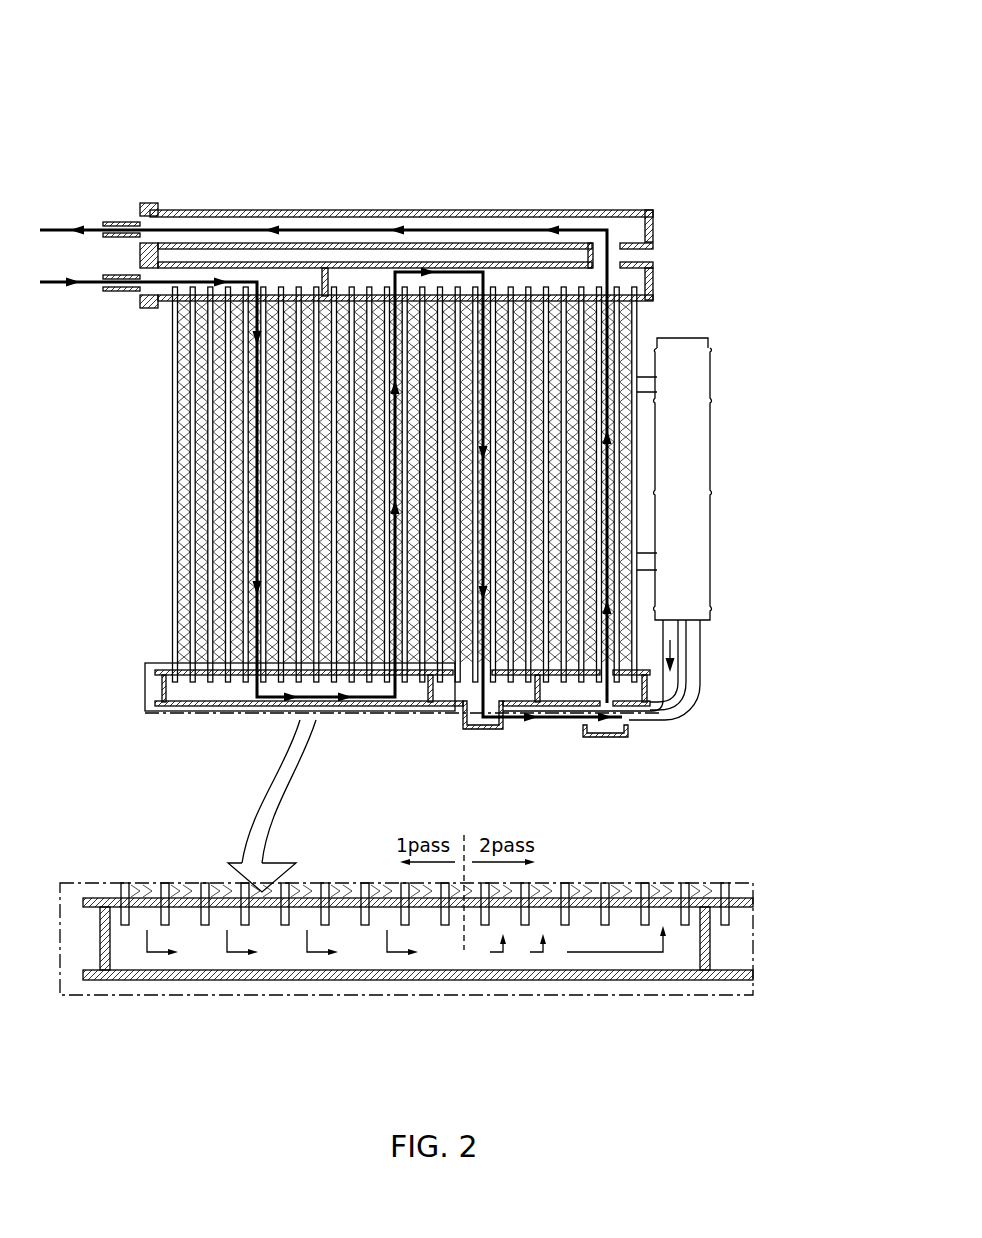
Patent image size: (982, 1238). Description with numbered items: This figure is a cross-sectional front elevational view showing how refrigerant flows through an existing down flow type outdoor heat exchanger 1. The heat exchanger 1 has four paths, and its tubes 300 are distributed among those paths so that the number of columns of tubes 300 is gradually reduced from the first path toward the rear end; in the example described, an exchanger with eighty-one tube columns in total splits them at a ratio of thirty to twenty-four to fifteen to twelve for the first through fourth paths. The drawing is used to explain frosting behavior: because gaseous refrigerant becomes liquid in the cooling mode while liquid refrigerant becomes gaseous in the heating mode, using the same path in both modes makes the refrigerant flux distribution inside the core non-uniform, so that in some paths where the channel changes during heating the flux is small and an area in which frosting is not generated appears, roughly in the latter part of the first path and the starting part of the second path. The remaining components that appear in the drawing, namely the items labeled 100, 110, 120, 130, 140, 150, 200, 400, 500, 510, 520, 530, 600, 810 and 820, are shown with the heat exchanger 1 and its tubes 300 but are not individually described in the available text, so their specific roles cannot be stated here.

The down flow type outdoor heat exchanger 1 is at (137, 103).
The first header tank 100 is at (433, 212).
The outlet pipe opening 110 is at (624, 255).
The header end wall 120 is at (640, 210).
The inlet pipe 130 is at (120, 291).
The outlet pipe 140 is at (120, 226).
The return flow passage 150 is at (606, 255).
The second header tank plate 200 is at (692, 980).
The tubes 300 is at (188, 440).
The fins 400 is at (180, 508).
The receiver dryer assembly 500 is at (713, 497).
The connection pipe 510 is at (702, 666).
The inner pipe 520 is at (685, 699).
The receiver dryer 530 is at (712, 537).
The baffle 600 is at (323, 268).
The first cup 810 is at (480, 730).
The second cup 820 is at (603, 740).